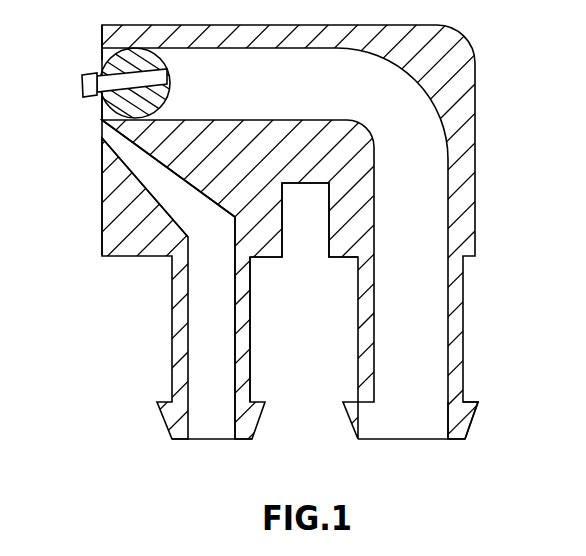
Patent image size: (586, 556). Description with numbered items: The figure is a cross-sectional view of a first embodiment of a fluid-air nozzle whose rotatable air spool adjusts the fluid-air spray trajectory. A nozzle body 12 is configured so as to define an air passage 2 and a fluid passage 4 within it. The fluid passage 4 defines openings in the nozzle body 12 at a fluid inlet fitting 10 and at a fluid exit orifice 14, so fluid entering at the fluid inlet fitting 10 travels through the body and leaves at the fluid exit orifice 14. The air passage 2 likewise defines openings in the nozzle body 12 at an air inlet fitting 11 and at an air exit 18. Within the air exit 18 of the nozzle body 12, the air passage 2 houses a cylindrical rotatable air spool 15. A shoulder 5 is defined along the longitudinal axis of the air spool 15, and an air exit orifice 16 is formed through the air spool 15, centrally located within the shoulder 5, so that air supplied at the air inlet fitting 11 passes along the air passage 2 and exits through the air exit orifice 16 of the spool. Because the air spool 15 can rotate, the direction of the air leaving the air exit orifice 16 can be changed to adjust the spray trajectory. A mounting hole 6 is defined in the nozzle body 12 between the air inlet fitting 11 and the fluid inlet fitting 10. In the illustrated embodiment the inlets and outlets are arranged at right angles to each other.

The air passage 2 is at (412, 440).
The fluid passage 4 is at (212, 440).
The shoulder 5 is at (97, 103).
The mounting hole 6 is at (303, 258).
The fluid inlet fitting 10 is at (200, 428).
The air inlet fitting 11 is at (426, 428).
The nozzle body 12 is at (476, 160).
The fluid exit orifice 14 is at (101, 140).
The air spool 15 is at (168, 63).
The air exit orifice 16 is at (83, 90).
The air exit 18 is at (101, 53).